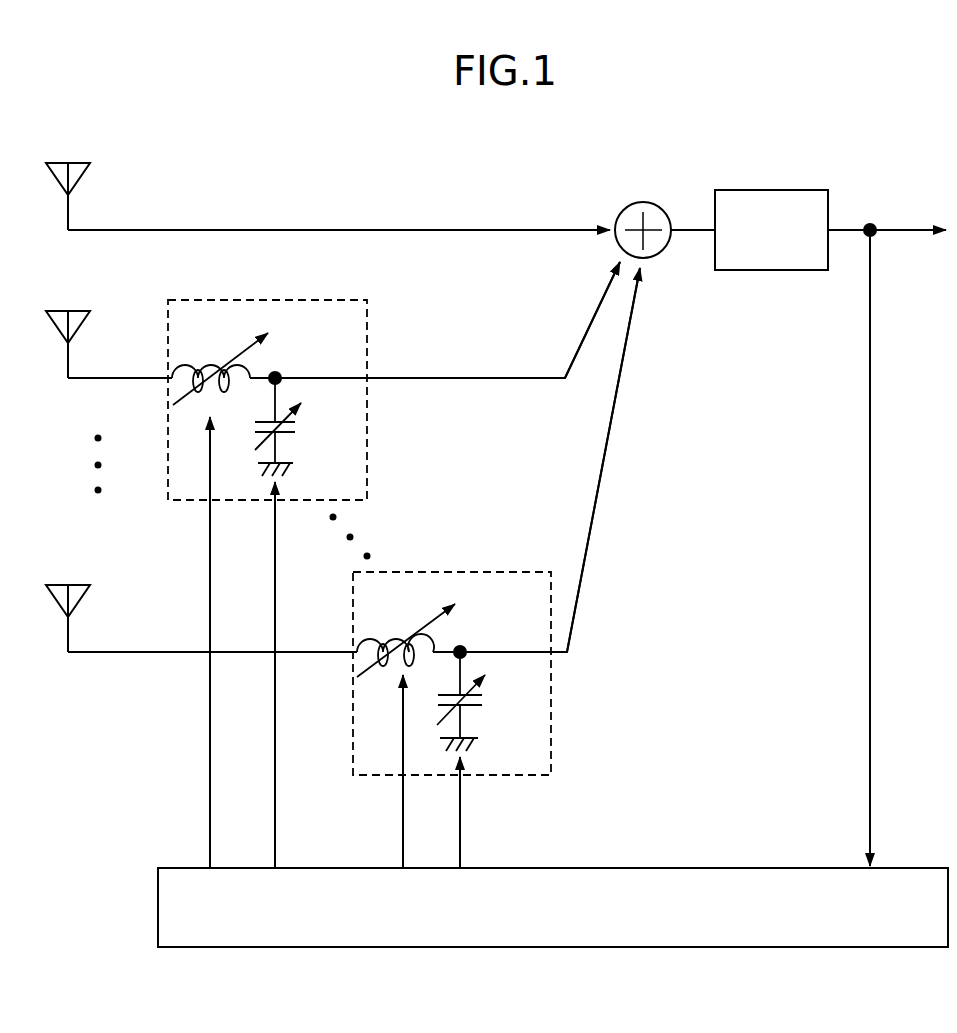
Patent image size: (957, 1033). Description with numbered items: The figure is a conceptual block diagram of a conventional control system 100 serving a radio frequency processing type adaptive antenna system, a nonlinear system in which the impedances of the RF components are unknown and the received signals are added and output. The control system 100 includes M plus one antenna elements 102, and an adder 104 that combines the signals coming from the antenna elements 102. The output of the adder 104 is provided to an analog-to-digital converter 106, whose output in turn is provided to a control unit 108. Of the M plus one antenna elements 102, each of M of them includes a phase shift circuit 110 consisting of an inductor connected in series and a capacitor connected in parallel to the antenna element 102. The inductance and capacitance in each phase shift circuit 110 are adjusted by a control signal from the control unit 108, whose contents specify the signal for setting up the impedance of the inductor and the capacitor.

The control system 100 is at (68, 99).
The antenna element 102 is at (68, 220).
The adder 104 is at (642, 203).
The analog-to-digital converter 106 is at (768, 190).
The control unit 108 is at (720, 868).
The phase shift circuit 110 is at (370, 332).